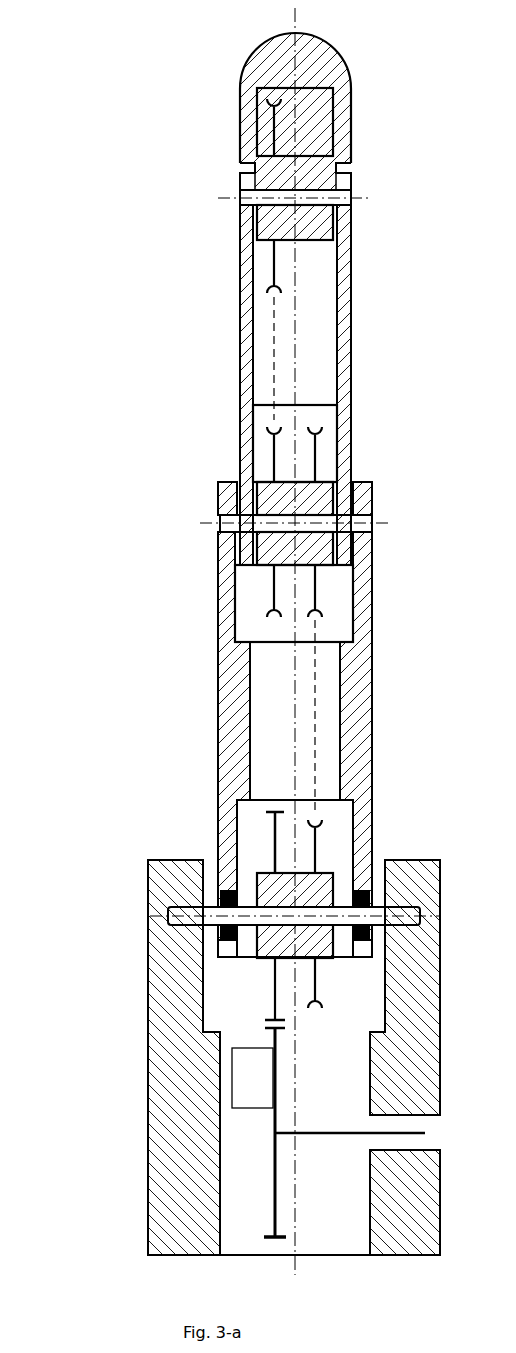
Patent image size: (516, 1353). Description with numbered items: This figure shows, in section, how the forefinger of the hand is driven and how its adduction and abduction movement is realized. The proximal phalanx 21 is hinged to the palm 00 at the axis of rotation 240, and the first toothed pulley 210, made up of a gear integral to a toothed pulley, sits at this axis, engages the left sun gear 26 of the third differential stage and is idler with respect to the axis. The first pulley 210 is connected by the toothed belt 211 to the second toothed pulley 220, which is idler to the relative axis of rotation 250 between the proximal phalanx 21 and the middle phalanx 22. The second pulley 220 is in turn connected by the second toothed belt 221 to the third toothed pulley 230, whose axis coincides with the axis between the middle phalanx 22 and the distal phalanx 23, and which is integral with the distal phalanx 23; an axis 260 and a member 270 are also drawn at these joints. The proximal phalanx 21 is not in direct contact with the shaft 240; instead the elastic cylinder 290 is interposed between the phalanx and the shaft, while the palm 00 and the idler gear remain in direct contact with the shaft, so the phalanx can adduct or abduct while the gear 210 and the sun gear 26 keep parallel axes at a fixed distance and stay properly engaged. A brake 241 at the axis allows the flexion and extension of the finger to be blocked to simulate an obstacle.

The palm 00 is at (148, 1215).
The proximal phalanx 21 is at (218, 670).
The first toothed pulley 210 is at (270, 855).
The toothed belt 211 is at (325, 715).
The middle phalanx 22 is at (240, 388).
The second toothed pulley 220 is at (323, 467).
The second toothed belt 221 is at (278, 355).
The distal phalanx 23 is at (238, 105).
The third toothed pulley 230 is at (280, 135).
The axis of rotation 240 is at (168, 913).
The brake 241 is at (230, 1088).
The relative axis of rotation 250 is at (200, 523).
The left sun gear 26 is at (268, 1200).
The upper pin 260 is at (218, 198).
The lower block 270 is at (300, 913).
The elastic cylinder 290 is at (220, 895).